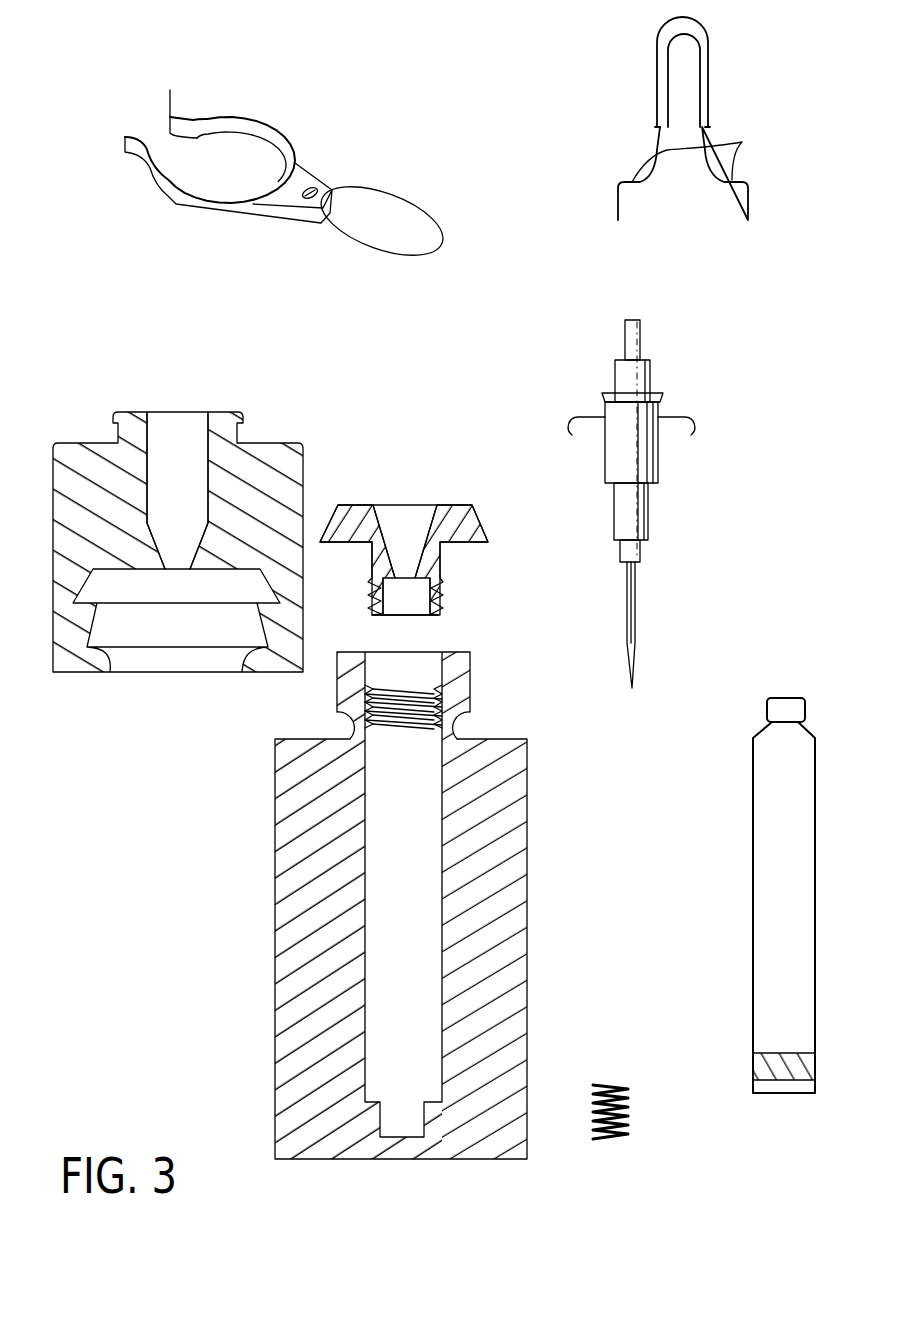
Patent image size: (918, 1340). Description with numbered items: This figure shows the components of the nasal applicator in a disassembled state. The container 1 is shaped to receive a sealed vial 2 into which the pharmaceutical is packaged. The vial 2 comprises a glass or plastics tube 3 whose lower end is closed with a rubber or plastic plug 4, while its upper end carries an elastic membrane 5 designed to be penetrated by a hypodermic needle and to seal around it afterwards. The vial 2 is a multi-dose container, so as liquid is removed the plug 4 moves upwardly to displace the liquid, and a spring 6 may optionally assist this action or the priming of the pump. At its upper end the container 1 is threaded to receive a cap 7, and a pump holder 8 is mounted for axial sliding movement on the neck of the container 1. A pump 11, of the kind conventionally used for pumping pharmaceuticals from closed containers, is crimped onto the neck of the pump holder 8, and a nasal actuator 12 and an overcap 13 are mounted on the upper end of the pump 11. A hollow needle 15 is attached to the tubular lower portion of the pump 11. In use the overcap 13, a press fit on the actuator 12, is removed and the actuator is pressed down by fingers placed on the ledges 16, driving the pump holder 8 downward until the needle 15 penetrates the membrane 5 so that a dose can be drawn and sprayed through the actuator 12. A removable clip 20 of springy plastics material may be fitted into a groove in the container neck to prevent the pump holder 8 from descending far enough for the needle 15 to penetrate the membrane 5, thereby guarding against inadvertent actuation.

The container 1 is at (297, 1032).
The sealed vial 2 is at (797, 797).
The tube 3 is at (753, 895).
The plug 4 is at (757, 1070).
The membrane 5 is at (795, 698).
The spring 6 is at (630, 1108).
The cap 7 is at (448, 505).
The pump holder 8 is at (270, 443).
The pump 11 is at (652, 517).
The nasal actuator 12 is at (750, 201).
The overcap 13 is at (707, 35).
The hollow needle 15 is at (633, 618).
The ledges 16 is at (742, 142).
The removable clip 20 is at (267, 123).